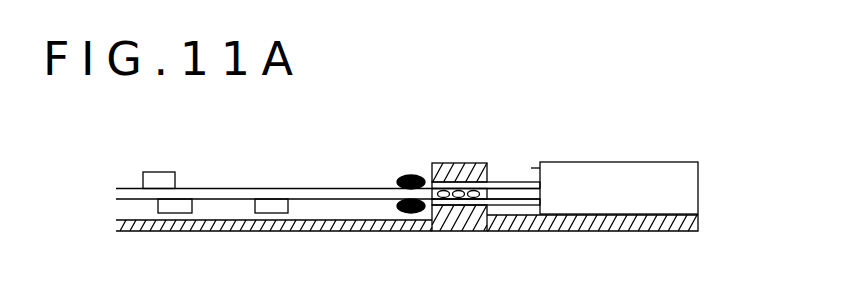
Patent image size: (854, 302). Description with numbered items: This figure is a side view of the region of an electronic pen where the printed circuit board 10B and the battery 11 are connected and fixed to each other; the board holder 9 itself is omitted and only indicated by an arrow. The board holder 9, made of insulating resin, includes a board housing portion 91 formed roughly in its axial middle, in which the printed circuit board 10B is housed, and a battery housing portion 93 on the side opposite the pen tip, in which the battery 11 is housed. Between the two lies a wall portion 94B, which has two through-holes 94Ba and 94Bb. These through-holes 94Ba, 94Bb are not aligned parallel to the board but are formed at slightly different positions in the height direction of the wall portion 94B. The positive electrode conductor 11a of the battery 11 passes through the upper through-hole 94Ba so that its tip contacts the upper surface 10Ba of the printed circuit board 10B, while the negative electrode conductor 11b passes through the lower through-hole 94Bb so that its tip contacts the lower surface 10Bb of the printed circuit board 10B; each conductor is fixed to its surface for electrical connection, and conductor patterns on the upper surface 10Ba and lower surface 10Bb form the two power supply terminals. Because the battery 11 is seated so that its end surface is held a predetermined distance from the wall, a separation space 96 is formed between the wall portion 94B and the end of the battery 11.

The board holder 9 is at (390, 238).
The printed circuit board 10B is at (323, 188).
The upper surface of the printed circuit board 10Ba is at (247, 188).
The lower surface of the printed circuit board 10Bb is at (337, 199).
The battery 11 is at (623, 162).
The positive electrode conductor 11a is at (505, 182).
The negative electrode conductor 11b is at (505, 205).
The board housing portion 91 is at (228, 231).
The battery housing portion 93 is at (620, 231).
The wall portion 94B is at (468, 162).
The through-hole 94Ba is at (453, 162).
The through-hole 94Bb is at (456, 229).
The separation space 96 is at (531, 168).